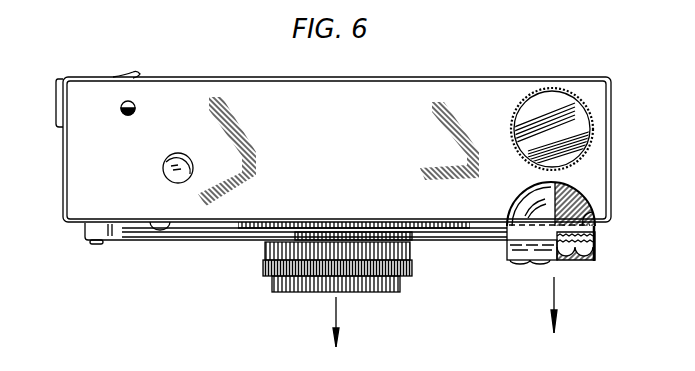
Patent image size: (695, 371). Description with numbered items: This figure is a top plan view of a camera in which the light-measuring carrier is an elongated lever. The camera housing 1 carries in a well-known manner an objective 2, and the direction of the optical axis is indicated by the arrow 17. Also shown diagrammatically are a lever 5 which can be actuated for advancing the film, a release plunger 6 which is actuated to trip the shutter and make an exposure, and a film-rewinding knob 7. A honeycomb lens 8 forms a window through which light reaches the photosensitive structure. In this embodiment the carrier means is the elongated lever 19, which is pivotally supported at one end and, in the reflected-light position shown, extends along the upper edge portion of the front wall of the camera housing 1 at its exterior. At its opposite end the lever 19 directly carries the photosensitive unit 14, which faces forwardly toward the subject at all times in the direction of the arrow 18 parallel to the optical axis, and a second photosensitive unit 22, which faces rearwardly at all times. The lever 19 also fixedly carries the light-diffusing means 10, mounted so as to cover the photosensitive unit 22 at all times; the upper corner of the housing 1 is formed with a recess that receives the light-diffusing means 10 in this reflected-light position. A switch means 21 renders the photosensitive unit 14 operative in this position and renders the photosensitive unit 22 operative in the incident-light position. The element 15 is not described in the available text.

The camera housing 1 is at (450, 94).
The objective 2 is at (320, 281).
The lever 5 is at (57, 95).
The release plunger 6 is at (188, 161).
The film-rewinding knob 7 is at (539, 100).
The honeycomb lens 8 is at (525, 261).
The light-diffusing means 10 is at (532, 202).
The photosensitive unit 14 is at (596, 240).
The release button 15 is at (132, 102).
The direction of the optical axis 17 is at (338, 312).
The arrow 18 is at (557, 288).
The elongated lever 19 is at (218, 233).
The switch means 21 is at (160, 221).
The second photosensitive unit 22 is at (580, 225).